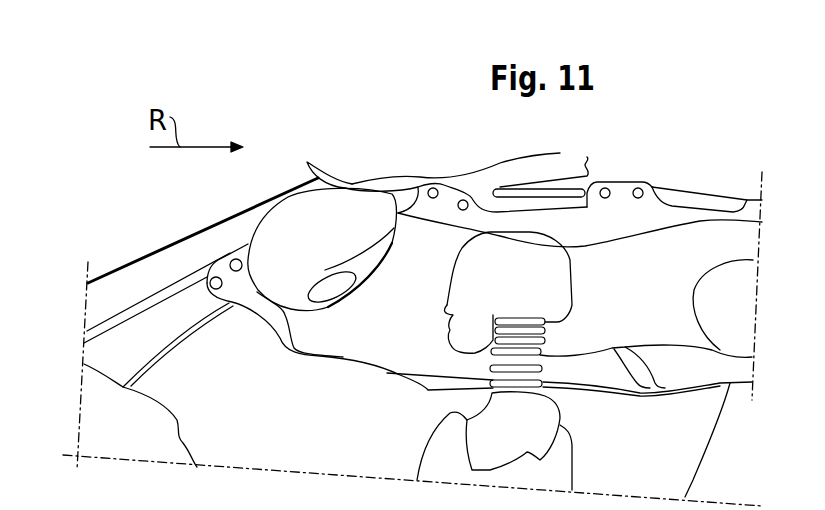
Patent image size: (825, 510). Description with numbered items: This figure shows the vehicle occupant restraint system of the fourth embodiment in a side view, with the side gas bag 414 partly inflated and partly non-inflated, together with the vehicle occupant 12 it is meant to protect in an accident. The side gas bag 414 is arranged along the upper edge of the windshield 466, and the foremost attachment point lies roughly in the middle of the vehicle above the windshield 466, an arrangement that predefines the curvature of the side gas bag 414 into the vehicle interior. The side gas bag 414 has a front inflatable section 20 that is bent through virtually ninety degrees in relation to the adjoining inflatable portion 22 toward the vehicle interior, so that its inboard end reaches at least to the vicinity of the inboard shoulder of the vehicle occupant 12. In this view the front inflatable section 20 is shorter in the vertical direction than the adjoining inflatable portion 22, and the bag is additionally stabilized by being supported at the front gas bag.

The windshield 466 is at (158, 246).
The front inflatable section 20 is at (337, 218).
The adjoining inflatable portion 22 is at (428, 238).
The side gas bag 414 is at (690, 185).
The vehicle occupant 12 is at (540, 290).